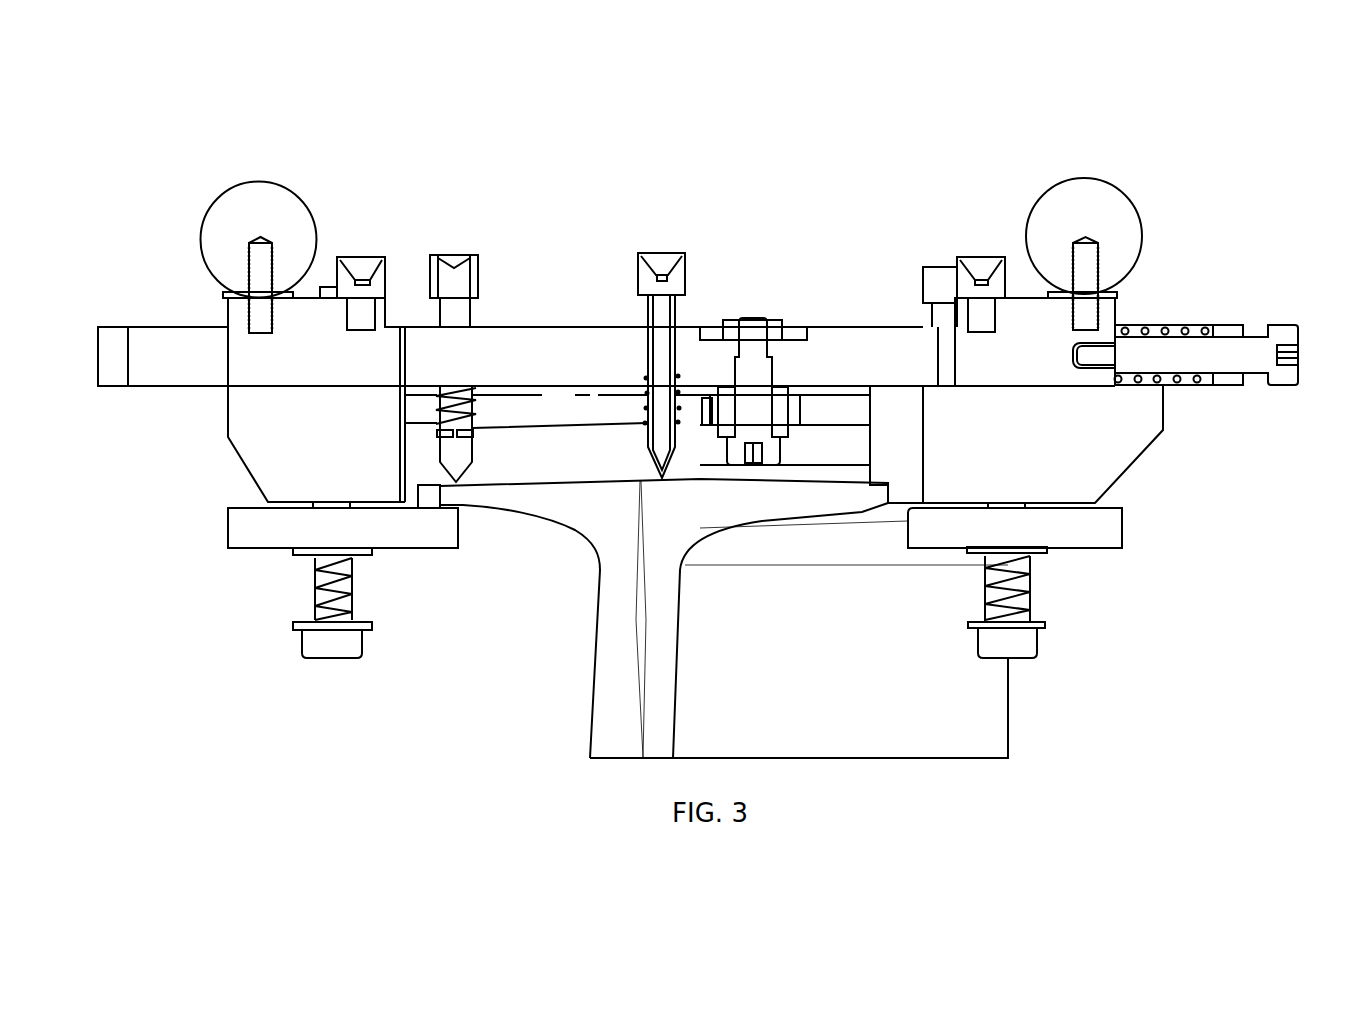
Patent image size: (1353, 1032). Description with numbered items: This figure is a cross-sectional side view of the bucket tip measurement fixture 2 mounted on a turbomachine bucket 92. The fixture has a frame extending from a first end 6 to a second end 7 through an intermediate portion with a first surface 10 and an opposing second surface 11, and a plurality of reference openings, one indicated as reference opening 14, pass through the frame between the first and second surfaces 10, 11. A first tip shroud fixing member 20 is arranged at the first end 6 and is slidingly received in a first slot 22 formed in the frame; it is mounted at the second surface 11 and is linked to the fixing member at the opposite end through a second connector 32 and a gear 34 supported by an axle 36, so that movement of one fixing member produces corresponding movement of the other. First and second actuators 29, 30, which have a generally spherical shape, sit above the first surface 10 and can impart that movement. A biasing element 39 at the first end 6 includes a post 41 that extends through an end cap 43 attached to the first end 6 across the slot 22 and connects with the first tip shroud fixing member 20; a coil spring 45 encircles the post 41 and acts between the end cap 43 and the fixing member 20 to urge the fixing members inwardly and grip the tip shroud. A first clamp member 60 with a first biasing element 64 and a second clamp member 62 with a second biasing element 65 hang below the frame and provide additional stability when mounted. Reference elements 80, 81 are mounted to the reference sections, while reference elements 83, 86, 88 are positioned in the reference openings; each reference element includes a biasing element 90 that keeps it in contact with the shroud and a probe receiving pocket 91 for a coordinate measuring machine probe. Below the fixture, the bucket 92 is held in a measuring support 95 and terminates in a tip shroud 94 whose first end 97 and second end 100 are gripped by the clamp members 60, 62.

The bucket tip measurement fixture 2 is at (160, 196).
The first end 6 is at (1193, 322).
The second end 7 is at (142, 327).
The first surface 10 is at (172, 327).
The second surface 11 is at (163, 375).
The reference opening 14 is at (210, 318).
The first tip shroud fixing member 20 is at (1139, 495).
The first slot 22 is at (212, 463).
The first actuator 29 is at (1082, 195).
The second actuator 30 is at (255, 192).
The second connector 32 is at (421, 438).
The gear 34 is at (797, 408).
The axle 36 is at (752, 325).
The biasing element 39 is at (1206, 341).
The post 41 is at (1235, 360).
The end cap 43 is at (1238, 317).
The coil spring 45 is at (1193, 390).
The first clamp member 60 is at (1114, 553).
The second clamp member 62 is at (214, 540).
The first biasing element 64 is at (1040, 575).
The second biasing element 65 is at (305, 580).
The reference element 80 is at (967, 262).
The reference element 81 is at (333, 262).
The reference element 83 is at (922, 282).
The reference element 86 is at (690, 265).
The reference element 88 is at (480, 272).
The biasing element 90 is at (478, 410).
The probe receiving pocket 91 is at (668, 258).
The turbomachine bucket 92 is at (746, 620).
The tip shroud 94 is at (545, 512).
The measuring support 95 is at (902, 496).
The first end 97 is at (810, 563).
The second end 100 is at (485, 497).